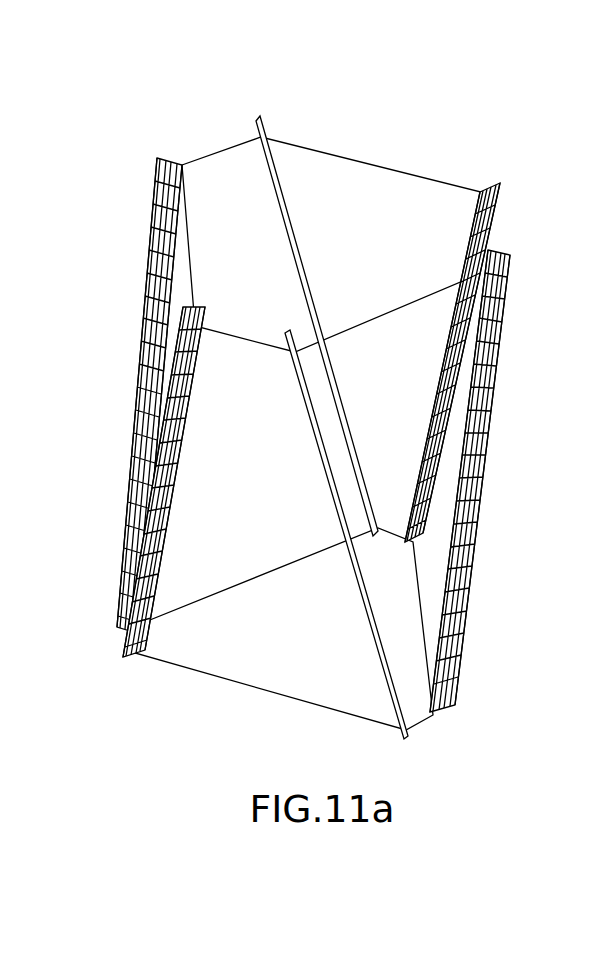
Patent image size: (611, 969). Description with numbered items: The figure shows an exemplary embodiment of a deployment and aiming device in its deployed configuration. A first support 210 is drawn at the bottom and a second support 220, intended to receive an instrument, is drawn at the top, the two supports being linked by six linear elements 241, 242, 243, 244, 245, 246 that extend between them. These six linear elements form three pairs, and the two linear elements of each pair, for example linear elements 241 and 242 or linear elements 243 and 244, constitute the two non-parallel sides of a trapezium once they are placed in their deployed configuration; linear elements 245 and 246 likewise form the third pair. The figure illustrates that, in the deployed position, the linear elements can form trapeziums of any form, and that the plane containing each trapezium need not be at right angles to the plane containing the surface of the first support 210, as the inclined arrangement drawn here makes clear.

The first support 210 is at (236, 688).
The second support 220 is at (376, 168).
The linear element 241 is at (122, 650).
The linear element 242 is at (385, 682).
The linear element 243 is at (481, 500).
The linear element 244 is at (497, 214).
The linear element 245 is at (262, 126).
The linear element 246 is at (148, 268).